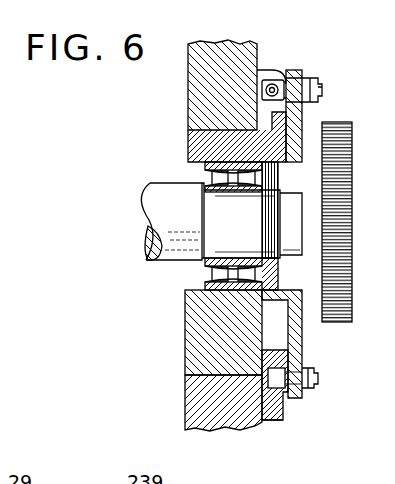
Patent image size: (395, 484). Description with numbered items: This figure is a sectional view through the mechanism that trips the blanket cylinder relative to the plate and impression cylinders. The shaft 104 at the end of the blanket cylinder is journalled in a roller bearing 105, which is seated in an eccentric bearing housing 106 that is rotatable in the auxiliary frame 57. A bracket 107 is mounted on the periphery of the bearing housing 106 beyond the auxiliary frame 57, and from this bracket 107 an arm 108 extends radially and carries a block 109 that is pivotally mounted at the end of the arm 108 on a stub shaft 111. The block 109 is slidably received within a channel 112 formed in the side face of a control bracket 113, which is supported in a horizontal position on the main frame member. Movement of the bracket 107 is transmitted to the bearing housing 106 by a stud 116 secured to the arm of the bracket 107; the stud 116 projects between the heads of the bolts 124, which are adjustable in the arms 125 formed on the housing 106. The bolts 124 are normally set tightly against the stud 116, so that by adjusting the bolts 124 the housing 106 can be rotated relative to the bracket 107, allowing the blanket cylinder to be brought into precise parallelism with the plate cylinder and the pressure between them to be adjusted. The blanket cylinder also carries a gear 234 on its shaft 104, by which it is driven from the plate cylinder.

The auxiliary frame 57 is at (204, 85).
The shaft 104 is at (145, 250).
The roller bearing 105 is at (215, 283).
The eccentric bearing housing 106 is at (210, 145).
The bracket 107 is at (302, 120).
The arm 108 is at (293, 337).
The block 109 is at (283, 398).
The stub shaft 111 is at (318, 380).
The channel 112 is at (281, 420).
The control bracket 113 is at (246, 428).
The stud 116 is at (322, 92).
The bolts 124 is at (302, 80).
The arms 125 is at (273, 80).
The gear 234 is at (343, 203).